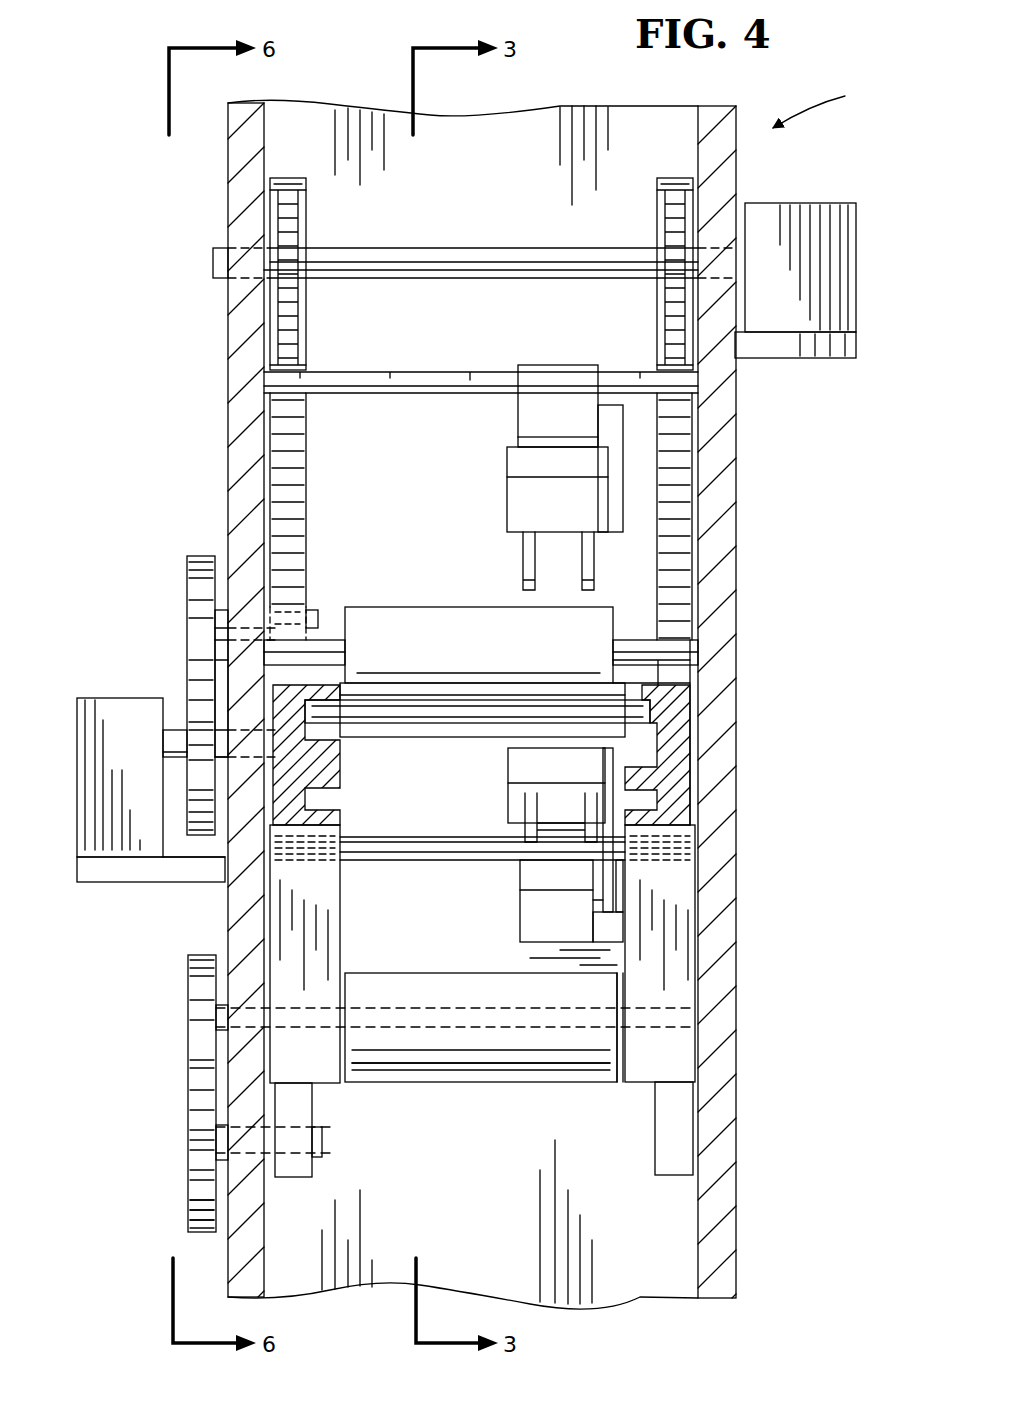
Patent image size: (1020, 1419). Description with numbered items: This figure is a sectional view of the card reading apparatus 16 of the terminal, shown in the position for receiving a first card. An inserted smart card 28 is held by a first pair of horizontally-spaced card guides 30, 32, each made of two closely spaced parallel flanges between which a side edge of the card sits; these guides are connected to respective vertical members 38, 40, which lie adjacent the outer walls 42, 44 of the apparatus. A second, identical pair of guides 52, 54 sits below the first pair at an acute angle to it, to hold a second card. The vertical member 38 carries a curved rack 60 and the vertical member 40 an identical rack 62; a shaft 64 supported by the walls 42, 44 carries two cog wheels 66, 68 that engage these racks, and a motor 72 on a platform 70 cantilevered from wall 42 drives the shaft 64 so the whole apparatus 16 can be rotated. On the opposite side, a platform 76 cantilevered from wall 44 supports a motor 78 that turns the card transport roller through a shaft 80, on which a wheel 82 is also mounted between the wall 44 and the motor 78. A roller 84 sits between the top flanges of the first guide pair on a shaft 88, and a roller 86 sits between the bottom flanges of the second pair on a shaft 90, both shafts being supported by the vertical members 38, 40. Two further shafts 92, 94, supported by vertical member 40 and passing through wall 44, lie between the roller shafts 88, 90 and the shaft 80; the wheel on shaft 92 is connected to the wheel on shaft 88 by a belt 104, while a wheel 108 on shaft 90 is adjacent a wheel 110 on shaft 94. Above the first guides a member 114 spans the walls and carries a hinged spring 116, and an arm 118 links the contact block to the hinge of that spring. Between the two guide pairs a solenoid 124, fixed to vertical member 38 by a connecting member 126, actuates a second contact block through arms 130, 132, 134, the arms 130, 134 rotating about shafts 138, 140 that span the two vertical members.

The card reading apparatus 16 is at (809, 105).
The smart card 28 is at (515, 712).
The card guide 30 is at (628, 740).
The card guide 32 is at (342, 746).
The vertical member 38 is at (702, 623).
The vertical member 40 is at (298, 607).
The wall 42 is at (740, 490).
The wall 44 is at (232, 480).
The guide 52 is at (662, 864).
The guide 54 is at (343, 803).
The curved rack 60 is at (705, 436).
The rack 62 is at (300, 456).
The shaft 64 is at (490, 248).
The cog wheel 66 is at (668, 205).
The cog wheel 68 is at (292, 205).
The platform 70 is at (852, 343).
The motor 72 is at (852, 243).
The platform 76 is at (120, 885).
The motor 78 is at (90, 778).
The shaft 80 is at (176, 728).
The wheel 82 is at (205, 862).
The roller 84 is at (470, 613).
The roller 86 is at (435, 975).
The shaft 88 is at (345, 647).
The shaft 90 is at (655, 1030).
The shaft 92 is at (230, 606).
The shaft 94 is at (322, 1137).
The belt 104 is at (187, 641).
The wheel 108 is at (187, 1047).
The wheel 110 is at (187, 1181).
The member 114 is at (413, 372).
The hinged spring 116 is at (538, 378).
The arm 118 is at (612, 410).
The solenoid 124 is at (527, 904).
The connecting member 126 is at (600, 948).
The arm 130 is at (622, 910).
The arm 132 is at (595, 906).
The arm 134 is at (620, 800).
The shaft 138 is at (432, 856).
The shaft 140 is at (440, 838).